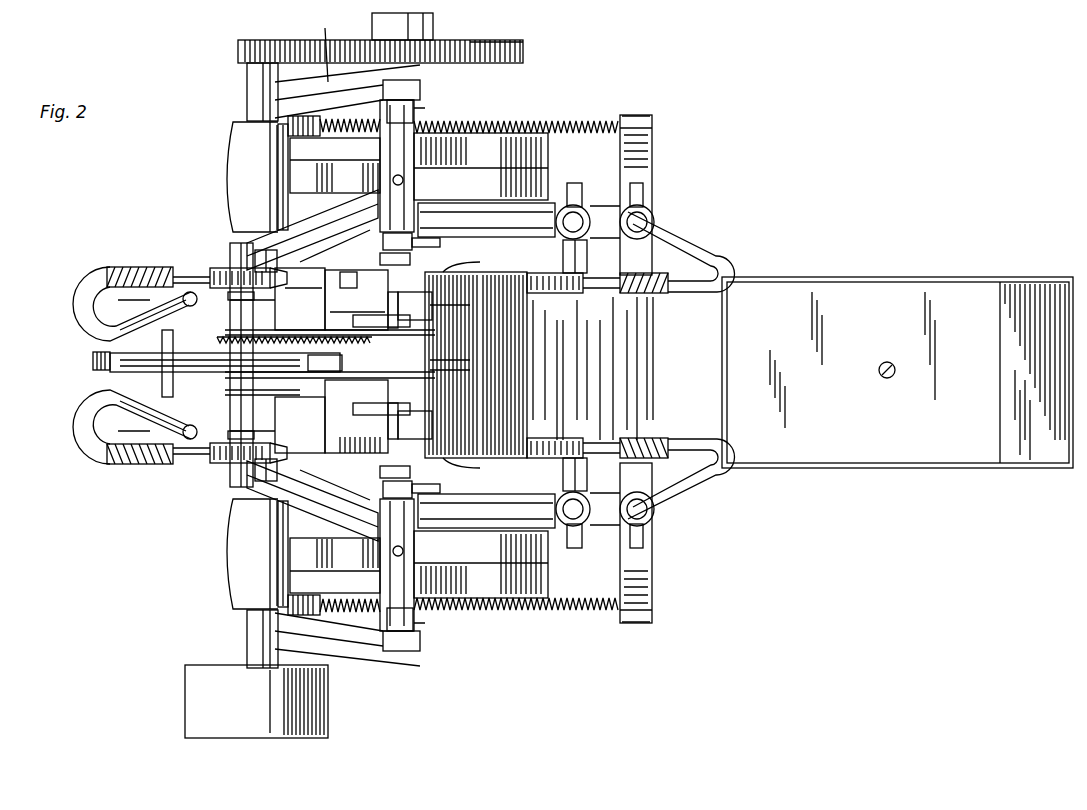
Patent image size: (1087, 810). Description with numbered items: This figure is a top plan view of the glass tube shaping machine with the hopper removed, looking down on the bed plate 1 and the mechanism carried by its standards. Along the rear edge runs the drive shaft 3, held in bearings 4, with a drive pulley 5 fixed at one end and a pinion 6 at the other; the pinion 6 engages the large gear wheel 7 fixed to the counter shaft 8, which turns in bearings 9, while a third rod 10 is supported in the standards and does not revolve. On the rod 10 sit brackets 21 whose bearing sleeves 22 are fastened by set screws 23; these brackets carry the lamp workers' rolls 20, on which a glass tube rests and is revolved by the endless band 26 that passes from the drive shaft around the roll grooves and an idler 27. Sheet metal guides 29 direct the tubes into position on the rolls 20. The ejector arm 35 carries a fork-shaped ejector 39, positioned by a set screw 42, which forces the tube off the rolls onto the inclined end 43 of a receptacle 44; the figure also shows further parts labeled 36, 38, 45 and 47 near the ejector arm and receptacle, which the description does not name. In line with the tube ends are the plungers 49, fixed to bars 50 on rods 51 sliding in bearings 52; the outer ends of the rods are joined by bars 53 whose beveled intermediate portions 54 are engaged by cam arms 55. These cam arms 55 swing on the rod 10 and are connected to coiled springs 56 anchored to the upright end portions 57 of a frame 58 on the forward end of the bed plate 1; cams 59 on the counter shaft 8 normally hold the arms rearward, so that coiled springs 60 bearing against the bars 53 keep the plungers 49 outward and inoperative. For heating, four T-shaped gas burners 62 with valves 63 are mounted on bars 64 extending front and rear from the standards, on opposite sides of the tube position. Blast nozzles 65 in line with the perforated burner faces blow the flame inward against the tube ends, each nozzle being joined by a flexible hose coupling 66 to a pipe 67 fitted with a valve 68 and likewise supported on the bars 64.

The bed plate 1 is at (539, 370).
The drive shaft 3 is at (249, 80).
The bearings 4 is at (238, 182).
The drive pulley 5 is at (490, 178).
The pinion 6 is at (248, 40).
The large gear wheel 7 is at (470, 42).
The counter shaft 8 is at (416, 63).
The bearings 9 is at (335, 369).
The third rod 10 is at (255, 478).
The rolls 20 is at (225, 365).
The brackets 21 is at (330, 302).
The bearing sleeves 22 is at (267, 361).
The set screws 23 is at (300, 425).
The endless band 26 is at (378, 416).
The idler 27 is at (330, 404).
The sheet metal guides 29 is at (300, 299).
The ejector arm 35 is at (100, 370).
The rack 36 is at (310, 337).
The gear 38 is at (356, 302).
The ejector 39 is at (140, 318).
The set screw 42 is at (95, 357).
The inclined end 43 is at (470, 310).
The receptacle 44 is at (862, 278).
The ring 45 is at (417, 386).
The hub 47 is at (470, 358).
The plungers 49 is at (397, 365).
The bars 50 is at (397, 233).
The rods 51 is at (434, 358).
The bearings 52 is at (397, 365).
The bars 53 is at (420, 90).
The beveled intermediate portions 54 is at (347, 365).
The cam arms 55 is at (352, 660).
The coiled springs 56 is at (497, 121).
The upright end portions 57 is at (641, 116).
The frame 58 is at (640, 165).
The cams 59 is at (330, 96).
The coiled springs 60 is at (388, 106).
The burners 62 is at (225, 268).
The valves 63 is at (565, 255).
The bars 64 is at (510, 518).
The blast nozzles 65 is at (178, 277).
The flexible hose coupling 66 is at (130, 268).
The pipes 67 is at (706, 257).
The valves 68 is at (655, 222).